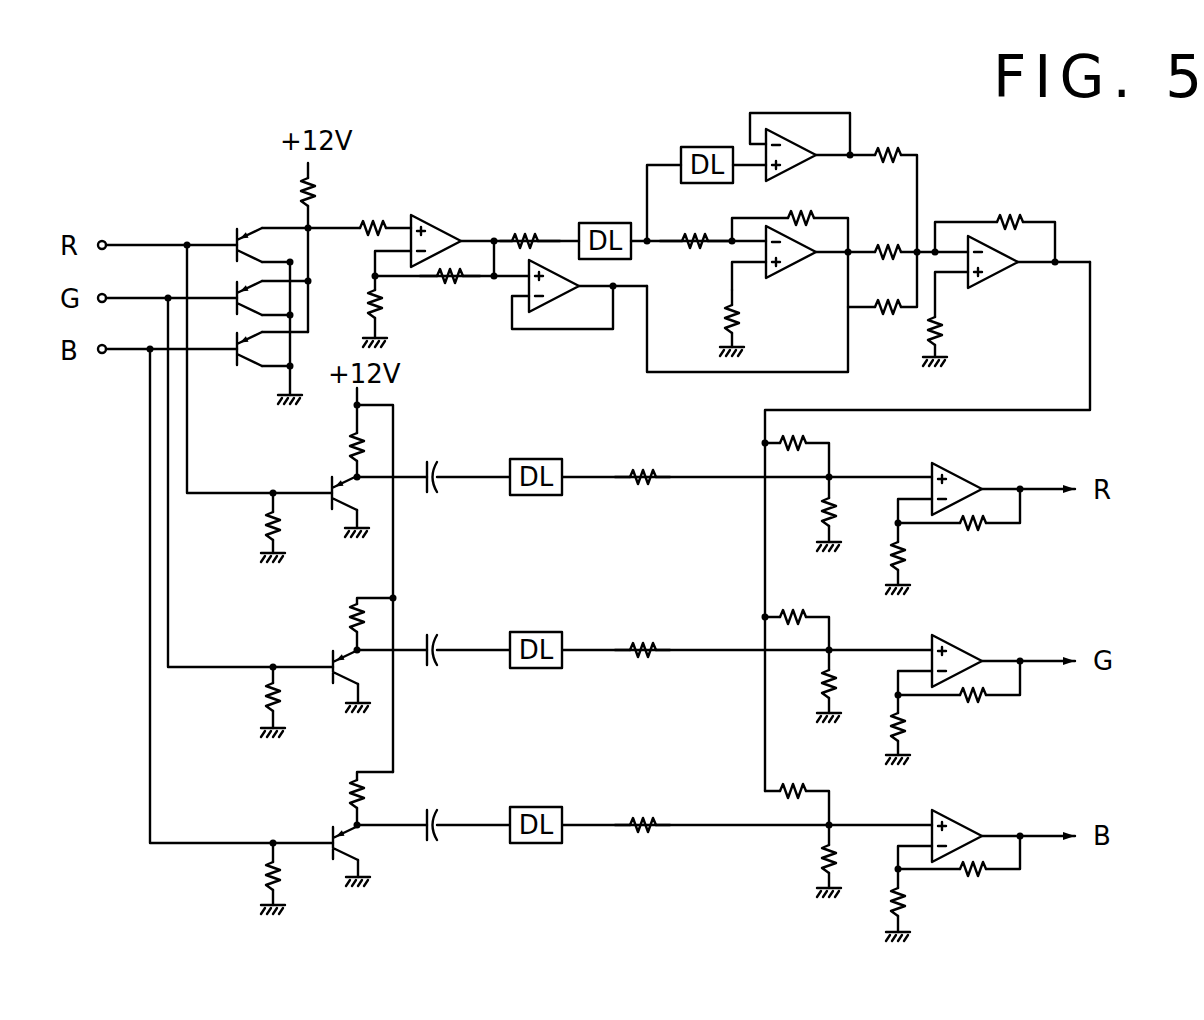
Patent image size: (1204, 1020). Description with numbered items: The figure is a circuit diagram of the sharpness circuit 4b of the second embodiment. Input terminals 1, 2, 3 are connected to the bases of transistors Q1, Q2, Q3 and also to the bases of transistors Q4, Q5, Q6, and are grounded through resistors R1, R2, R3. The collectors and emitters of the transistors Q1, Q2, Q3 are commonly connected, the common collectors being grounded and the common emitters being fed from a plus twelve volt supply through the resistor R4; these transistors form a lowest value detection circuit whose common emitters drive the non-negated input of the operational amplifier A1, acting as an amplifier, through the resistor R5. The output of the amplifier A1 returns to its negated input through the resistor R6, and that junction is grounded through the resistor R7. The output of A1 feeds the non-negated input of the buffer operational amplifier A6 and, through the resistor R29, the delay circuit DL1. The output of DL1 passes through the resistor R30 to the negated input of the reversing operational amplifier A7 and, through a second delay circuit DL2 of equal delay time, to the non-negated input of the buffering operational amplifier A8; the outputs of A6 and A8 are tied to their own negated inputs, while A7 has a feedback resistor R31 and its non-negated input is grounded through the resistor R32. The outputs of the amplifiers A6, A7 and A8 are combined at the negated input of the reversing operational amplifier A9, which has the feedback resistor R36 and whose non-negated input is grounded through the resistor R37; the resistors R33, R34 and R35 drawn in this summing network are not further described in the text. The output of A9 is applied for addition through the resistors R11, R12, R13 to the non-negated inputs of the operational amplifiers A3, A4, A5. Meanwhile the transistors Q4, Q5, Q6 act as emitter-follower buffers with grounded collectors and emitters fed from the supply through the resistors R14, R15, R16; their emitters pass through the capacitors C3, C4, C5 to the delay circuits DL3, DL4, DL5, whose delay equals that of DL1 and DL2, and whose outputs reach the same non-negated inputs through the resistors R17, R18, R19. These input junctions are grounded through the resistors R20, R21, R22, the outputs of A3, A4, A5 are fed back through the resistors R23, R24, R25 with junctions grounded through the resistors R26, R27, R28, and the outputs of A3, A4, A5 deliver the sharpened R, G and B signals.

The sharpness circuit 4b is at (136, 107).
The input terminal 1 is at (106, 241).
The input terminal 2 is at (106, 294).
The input terminal 3 is at (106, 345).
The transistor Q1 is at (231, 237).
The transistor Q2 is at (231, 292).
The transistor Q3 is at (229, 342).
The transistor Q4 is at (331, 500).
The transistor Q5 is at (332, 673).
The transistor Q6 is at (331, 849).
The resistor R1 is at (254, 527).
The resistor R2 is at (251, 702).
The resistor R3 is at (252, 878).
The resistor R4 is at (289, 195).
The resistor R5 is at (359, 211).
The resistor R6 is at (450, 295).
The resistor R7 is at (358, 311).
The resistor R11 is at (806, 445).
The resistor R12 is at (797, 612).
The resistor R13 is at (797, 785).
The resistor R14 is at (333, 441).
The resistor R15 is at (347, 624).
The resistor R16 is at (346, 798).
The resistor R17 is at (642, 459).
The resistor R18 is at (642, 631).
The resistor R19 is at (642, 806).
The resistor R20 is at (807, 514).
The resistor R21 is at (807, 686).
The resistor R22 is at (807, 861).
The resistor R23 is at (948, 544).
The resistor R24 is at (948, 716).
The resistor R25 is at (946, 888).
The resistor R26 is at (874, 558).
The resistor R27 is at (871, 729).
The resistor R28 is at (867, 905).
The resistor R29 is at (530, 221).
The resistor R30 is at (696, 223).
The resistor R31 is at (790, 214).
The resistor R32 is at (708, 323).
The resistor R33 is at (882, 302).
The resistor R34 is at (908, 234).
The resistor R35 is at (883, 184).
The feed back resistor R36 is at (995, 220).
The resistor R37 is at (957, 341).
The capacitor C3 is at (438, 460).
The capacitor C4 is at (437, 632).
The capacitor C5 is at (437, 806).
The delay circuit DL1 is at (600, 223).
The delay circuit DL2 is at (699, 143).
The delay circuit DL3 is at (535, 458).
The delay circuit DL4 is at (535, 631).
The delay circuit DL5 is at (535, 806).
The operational amplifier A1 is at (438, 231).
The operational amplifier A3 is at (986, 487).
The operational amplifier A4 is at (986, 653).
The operational amplifier A5 is at (986, 827).
The operational amplifier A6 is at (579, 294).
The operational amplifier A7 is at (790, 263).
The operational amplifier A8 is at (800, 147).
The operational amplifier A9 is at (1012, 276).